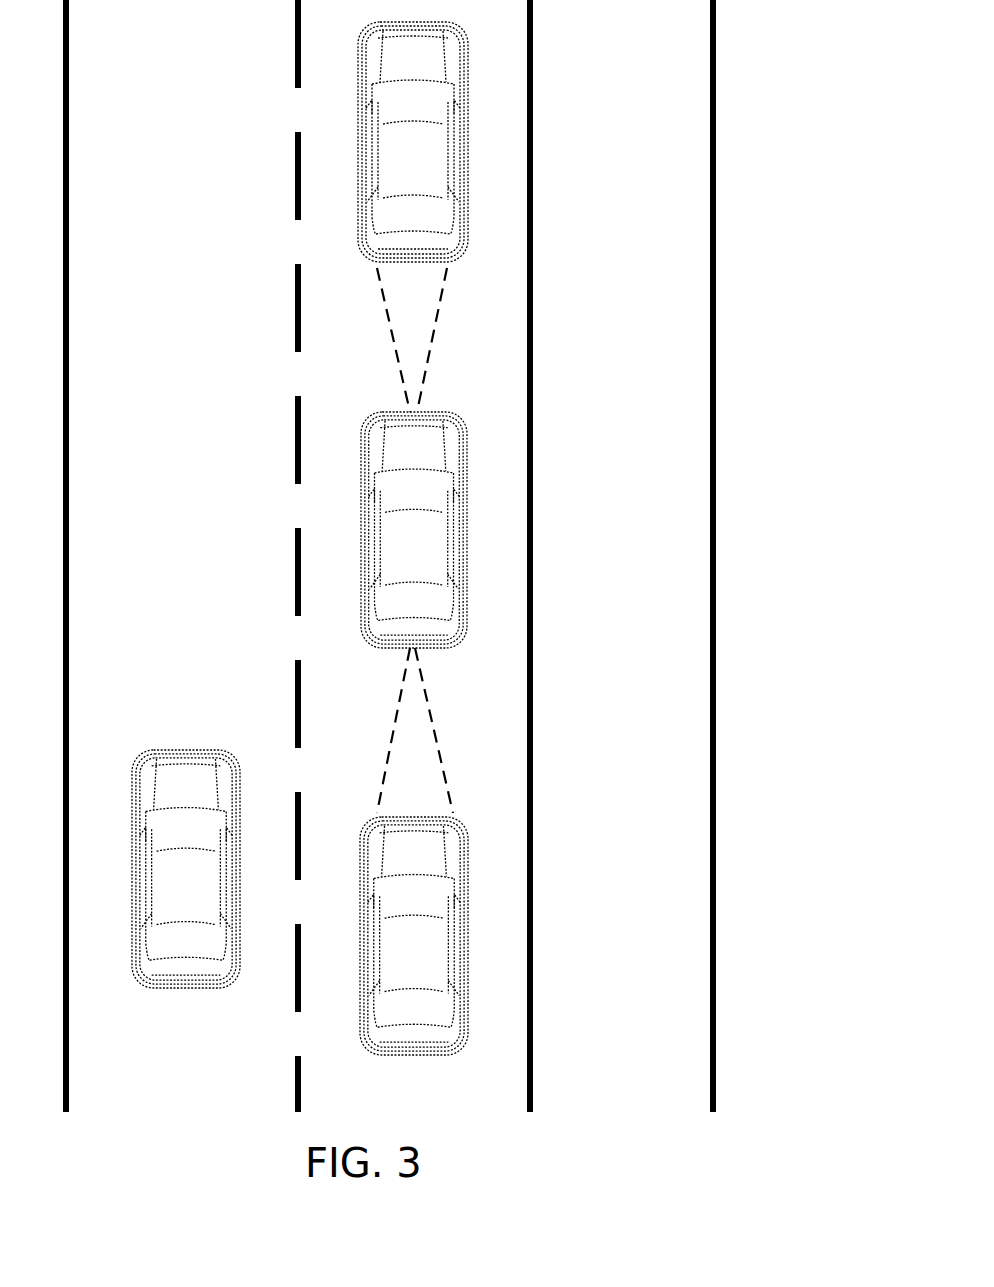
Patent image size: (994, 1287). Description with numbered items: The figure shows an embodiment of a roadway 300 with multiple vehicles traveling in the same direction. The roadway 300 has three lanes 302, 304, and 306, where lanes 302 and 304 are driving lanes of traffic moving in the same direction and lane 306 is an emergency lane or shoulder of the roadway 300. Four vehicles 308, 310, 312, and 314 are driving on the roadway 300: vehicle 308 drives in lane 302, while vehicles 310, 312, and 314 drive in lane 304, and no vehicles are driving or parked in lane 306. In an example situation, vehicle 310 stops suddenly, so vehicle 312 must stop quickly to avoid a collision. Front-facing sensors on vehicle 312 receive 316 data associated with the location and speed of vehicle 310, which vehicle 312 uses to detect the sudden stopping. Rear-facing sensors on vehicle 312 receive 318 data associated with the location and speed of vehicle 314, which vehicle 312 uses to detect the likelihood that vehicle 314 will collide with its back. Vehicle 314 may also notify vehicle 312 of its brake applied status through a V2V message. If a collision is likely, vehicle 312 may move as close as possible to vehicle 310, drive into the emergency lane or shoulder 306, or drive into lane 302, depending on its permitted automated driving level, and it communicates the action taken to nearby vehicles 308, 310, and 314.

The roadway 300 is at (763, 35).
The lane 302 is at (132, 556).
The lane 304 is at (365, 556).
The emergency lane or shoulder 306 is at (621, 556).
The vehicle 308 is at (186, 869).
The vehicle 310 is at (413, 142).
The vehicle 312 is at (414, 530).
The vehicle 314 is at (414, 936).
The receiving of data by front-facing sensors 316 is at (392, 346).
The receiving of data by rear-facing sensors 318 is at (395, 723).